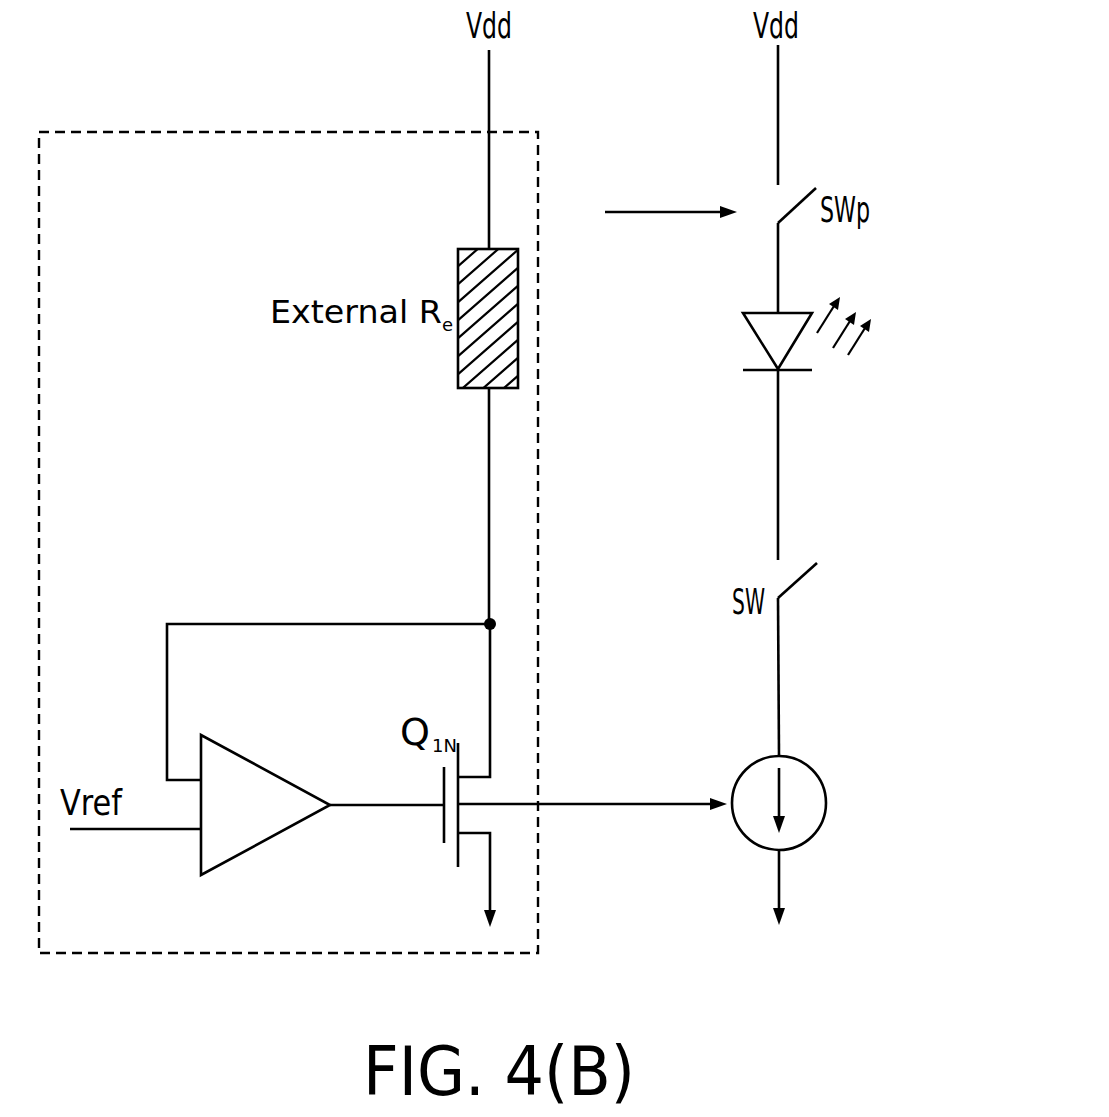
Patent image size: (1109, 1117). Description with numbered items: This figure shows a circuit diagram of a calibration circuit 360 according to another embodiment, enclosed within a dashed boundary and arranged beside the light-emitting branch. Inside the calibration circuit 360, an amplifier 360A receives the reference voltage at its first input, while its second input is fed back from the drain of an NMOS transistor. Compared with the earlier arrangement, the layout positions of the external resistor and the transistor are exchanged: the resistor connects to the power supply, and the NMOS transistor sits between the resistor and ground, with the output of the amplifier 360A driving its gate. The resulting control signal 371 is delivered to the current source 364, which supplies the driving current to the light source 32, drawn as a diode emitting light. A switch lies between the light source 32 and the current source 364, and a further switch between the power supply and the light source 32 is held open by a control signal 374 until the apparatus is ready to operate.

The calibration circuit 360 is at (288, 130).
The first amplifier 360A is at (272, 767).
The control signal 374 is at (672, 211).
The light source 32 is at (760, 345).
The current source 364 is at (826, 803).
The control signal 371 is at (640, 808).